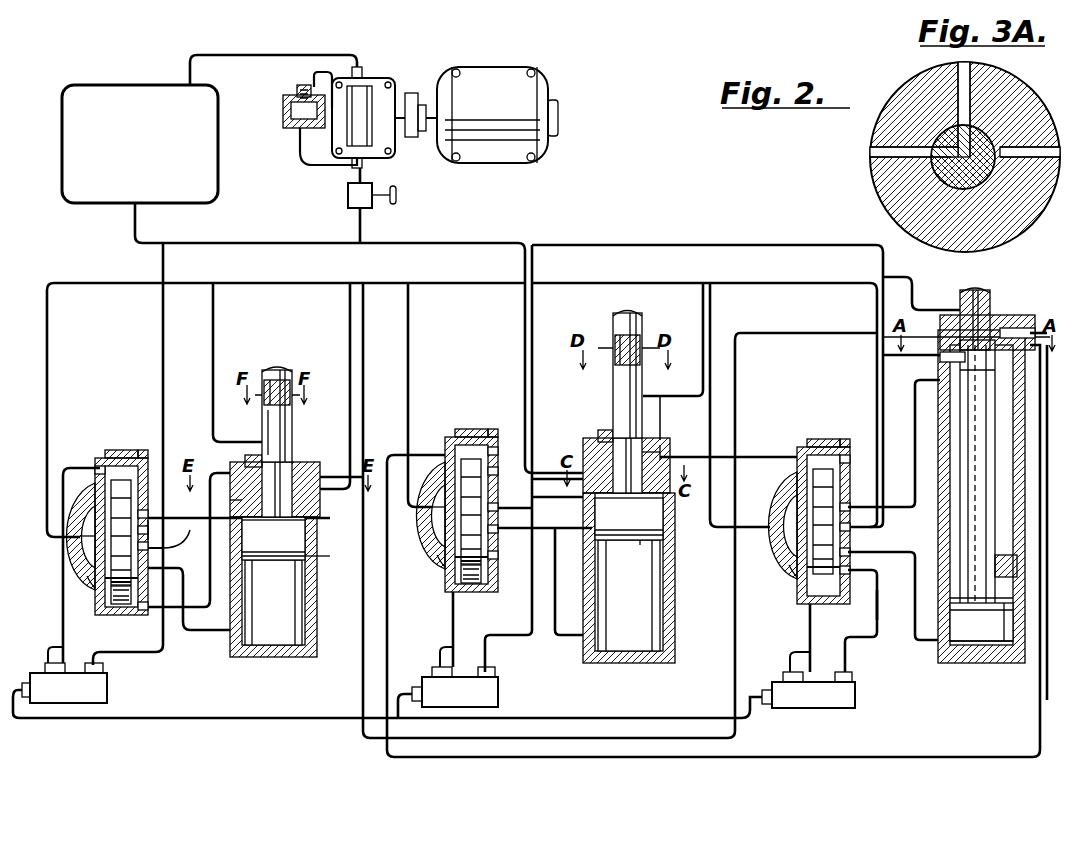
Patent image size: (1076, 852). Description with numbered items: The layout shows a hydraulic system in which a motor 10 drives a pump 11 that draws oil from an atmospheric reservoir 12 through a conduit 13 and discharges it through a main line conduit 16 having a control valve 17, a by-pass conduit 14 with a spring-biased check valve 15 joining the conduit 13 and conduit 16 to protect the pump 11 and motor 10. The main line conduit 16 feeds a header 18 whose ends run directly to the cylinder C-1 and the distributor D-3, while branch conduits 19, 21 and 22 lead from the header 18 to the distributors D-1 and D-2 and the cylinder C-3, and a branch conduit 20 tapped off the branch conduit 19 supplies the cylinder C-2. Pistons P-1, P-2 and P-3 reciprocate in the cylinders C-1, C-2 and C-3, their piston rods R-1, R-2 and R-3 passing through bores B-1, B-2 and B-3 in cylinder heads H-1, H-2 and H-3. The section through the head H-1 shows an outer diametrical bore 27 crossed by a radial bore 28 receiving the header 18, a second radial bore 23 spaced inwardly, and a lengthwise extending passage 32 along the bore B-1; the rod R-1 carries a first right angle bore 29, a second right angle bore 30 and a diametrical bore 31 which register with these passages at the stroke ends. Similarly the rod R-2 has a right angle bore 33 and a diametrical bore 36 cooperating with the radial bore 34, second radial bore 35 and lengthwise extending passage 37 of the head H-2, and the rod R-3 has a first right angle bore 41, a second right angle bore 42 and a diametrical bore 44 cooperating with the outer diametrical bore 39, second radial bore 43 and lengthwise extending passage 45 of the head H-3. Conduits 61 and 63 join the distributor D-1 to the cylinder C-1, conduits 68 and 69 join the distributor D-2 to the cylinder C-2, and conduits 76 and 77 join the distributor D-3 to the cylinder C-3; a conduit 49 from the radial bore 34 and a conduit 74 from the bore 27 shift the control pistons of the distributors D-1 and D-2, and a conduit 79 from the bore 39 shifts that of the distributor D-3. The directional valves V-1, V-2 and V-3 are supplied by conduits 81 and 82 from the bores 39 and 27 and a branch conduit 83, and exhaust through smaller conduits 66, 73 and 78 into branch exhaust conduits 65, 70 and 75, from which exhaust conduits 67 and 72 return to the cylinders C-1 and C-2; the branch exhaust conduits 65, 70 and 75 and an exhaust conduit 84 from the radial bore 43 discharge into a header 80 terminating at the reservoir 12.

In FIG. 2, the motor 10 is at (530, 82).
In FIG. 2, the pump 11 is at (375, 88).
In FIG. 2, the reservoir 12 is at (132, 156).
In FIG. 2, the conduit 13 is at (272, 62).
In FIG. 2, the by-pass conduit 14 is at (312, 74).
In FIG. 2, the spring-biased check valve 15 is at (286, 128).
In FIG. 2, the main line conduit 16 is at (362, 232).
In FIG. 2, the control valve 17 is at (348, 200).
In FIG. 2, the header 18 is at (452, 286).
In FIG. 2, the branch conduit 19 is at (704, 300).
In FIG. 2, the branch conduit 20 is at (680, 398).
In FIG. 2, the branch conduit 21 is at (409, 368).
In FIG. 2, the branch conduit 22 is at (214, 336).
In FIG. 2, the second radial bore 23 is at (970, 368).
In FIG. 2, the outer diametrical bore 27 is at (958, 310).
In FIG. 3A, the outer diametrical bore 27 is at (866, 150).
In FIG. 3A, the radial bore 28 is at (972, 72).
In FIG. 3A, the first right angle bore 29 is at (910, 100).
In FIG. 2, the second right angle bore 30 is at (995, 562).
In FIG. 2, the diametrical bore 31 is at (980, 474).
In FIG. 2, the lengthwise extending passage 32 is at (1040, 332).
In FIG. 3A, the lengthwise extending passage 32 is at (1010, 140).
In FIG. 2, the right angle bore 33 is at (641, 342).
In FIG. 2, the radial bore 34 is at (678, 441).
In FIG. 2, the second radial bore 35 is at (629, 519).
In FIG. 2, the diametrical bore 36 is at (635, 527).
In FIG. 2, the lengthwise extending passage 37 is at (654, 437).
In FIG. 2, the outer diametrical bore 39 is at (195, 540).
In FIG. 2, the first right angle bore 41 is at (267, 432).
In FIG. 2, the second right angle bore 42 is at (288, 380).
In FIG. 2, the second radial bore 43 is at (322, 490).
In FIG. 2, the diametrical bore 44 is at (273, 540).
In FIG. 2, the lengthwise extending passage 45 is at (229, 503).
In FIG. 2, the conduit 49 is at (765, 455).
In FIG. 2, the conduit 61 is at (874, 615).
In FIG. 2, the conduit 63 is at (896, 505).
In FIG. 2, the branch exhaust conduit 65 is at (884, 556).
In FIG. 2, the conduit 66 is at (879, 602).
In FIG. 2, the exhaust conduit 67 is at (893, 368).
In FIG. 2, the conduit 68 is at (560, 614).
In FIG. 2, the conduit 69 is at (557, 482).
In FIG. 2, the branch exhaust conduit 70 is at (540, 505).
In FIG. 2, the exhaust conduit 72 is at (359, 338).
In FIG. 2, the conduit 73 is at (530, 615).
In FIG. 2, the conduit 74 is at (388, 596).
In FIG. 2, the branch exhaust conduit 75 is at (168, 547).
In FIG. 2, the conduit 76 is at (185, 537).
In FIG. 2, the conduit 77 is at (180, 518).
In FIG. 2, the conduit 78 is at (163, 650).
In FIG. 2, the conduit 79 is at (195, 604).
In FIG. 2, the header 80 is at (600, 246).
In FIG. 2, the conduit 81 is at (363, 688).
In FIG. 2, the conduit 82 is at (24, 720).
In FIG. 2, the branch conduit 83 is at (399, 690).
In FIG. 2, the exhaust conduit 84 is at (351, 396).
In FIG. 2, the cylinder C-1 is at (965, 499).
In FIG. 2, the cylinder C-2 is at (646, 578).
In FIG. 2, the cylinder C-3 is at (290, 587).
In FIG. 2, the piston P-1 is at (990, 630).
In FIG. 2, the piston P-2 is at (629, 595).
In FIG. 2, the piston P-3 is at (282, 560).
In FIG. 2, the piston rod R-1 is at (998, 465).
In FIG. 2, the piston rod R-2 is at (646, 375).
In FIG. 2, the piston rod R-3 is at (292, 404).
In FIG. 2, the bore B-1 is at (1000, 322).
In FIG. 2, the bore B-2 is at (595, 430).
In FIG. 2, the bore B-3 is at (245, 455).
In FIG. 2, the cylinder head H-1 is at (977, 332).
In FIG. 2, the cylinder head H-2 is at (625, 455).
In FIG. 2, the cylinder head H-3 is at (278, 480).
In FIG. 2, the fluid pressure distributor D-1 is at (810, 512).
In FIG. 2, the fluid pressure distributor D-2 is at (454, 499).
In FIG. 2, the fluid pressure distributor D-3 is at (94, 533).
In FIG. 2, the directional valve V-1 is at (825, 678).
In FIG. 2, the directional valve V-2 is at (472, 670).
In FIG. 2, the directional valve V-3 is at (80, 673).